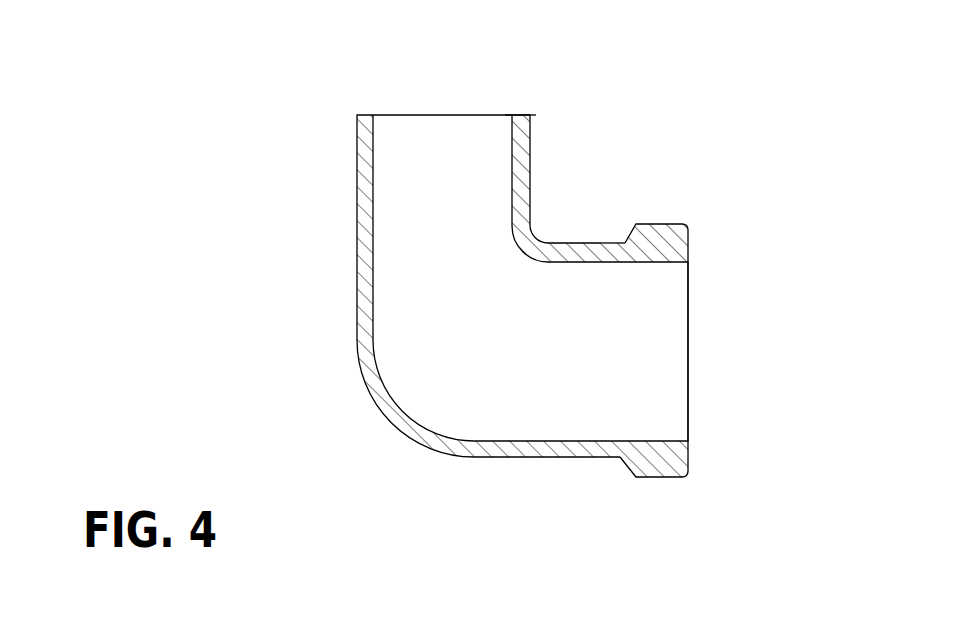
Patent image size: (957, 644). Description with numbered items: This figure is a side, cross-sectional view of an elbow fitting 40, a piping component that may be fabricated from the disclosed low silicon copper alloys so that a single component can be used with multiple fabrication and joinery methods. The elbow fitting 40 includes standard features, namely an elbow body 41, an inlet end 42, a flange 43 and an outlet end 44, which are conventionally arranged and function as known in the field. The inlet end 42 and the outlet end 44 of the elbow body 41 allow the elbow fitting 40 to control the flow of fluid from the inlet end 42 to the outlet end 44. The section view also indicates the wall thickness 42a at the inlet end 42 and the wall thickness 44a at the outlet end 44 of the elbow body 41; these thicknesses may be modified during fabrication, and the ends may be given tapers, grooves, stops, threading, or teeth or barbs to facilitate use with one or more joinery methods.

The elbow fitting 40 is at (702, 84).
The elbow body 41 is at (531, 158).
The inlet end 42 is at (638, 330).
The wall thickness at the inlet end 42a is at (740, 395).
The flange 43 is at (663, 224).
The outlet end 44 is at (436, 162).
The wall thickness at the outlet end 44a is at (562, 69).